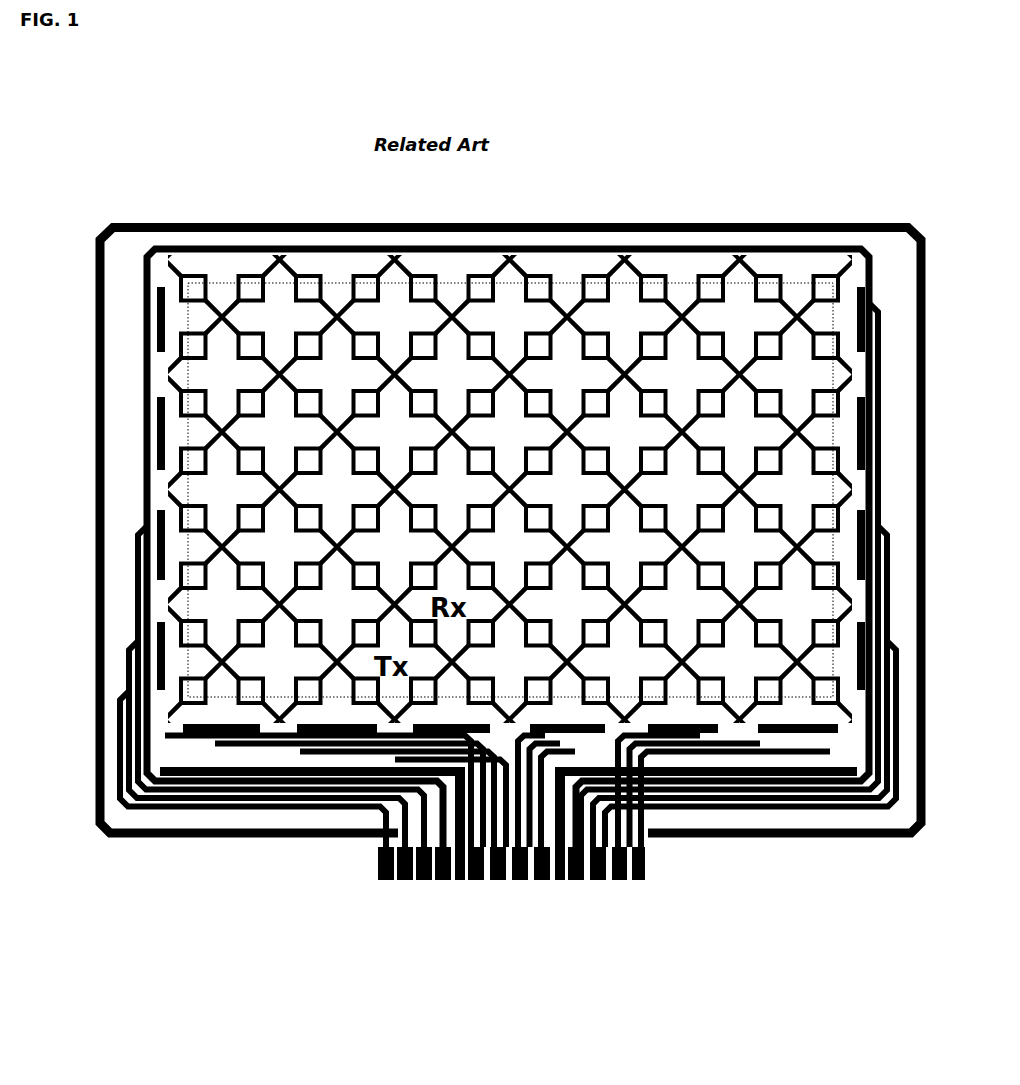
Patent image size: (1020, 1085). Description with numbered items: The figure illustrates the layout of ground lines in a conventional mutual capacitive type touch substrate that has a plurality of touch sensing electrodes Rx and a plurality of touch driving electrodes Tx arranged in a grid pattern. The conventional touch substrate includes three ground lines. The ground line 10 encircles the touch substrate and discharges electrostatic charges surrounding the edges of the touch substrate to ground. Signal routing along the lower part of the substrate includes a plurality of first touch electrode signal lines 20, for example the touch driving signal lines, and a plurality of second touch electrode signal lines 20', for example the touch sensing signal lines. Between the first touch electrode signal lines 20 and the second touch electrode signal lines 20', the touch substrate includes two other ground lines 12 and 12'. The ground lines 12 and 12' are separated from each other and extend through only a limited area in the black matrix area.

The ground line 10 is at (258, 838).
The ground line 12 is at (249, 747).
The ground line 12' is at (706, 848).
The first touch electrode signal lines 20 is at (270, 715).
The second touch electrode signal lines 20' is at (738, 602).